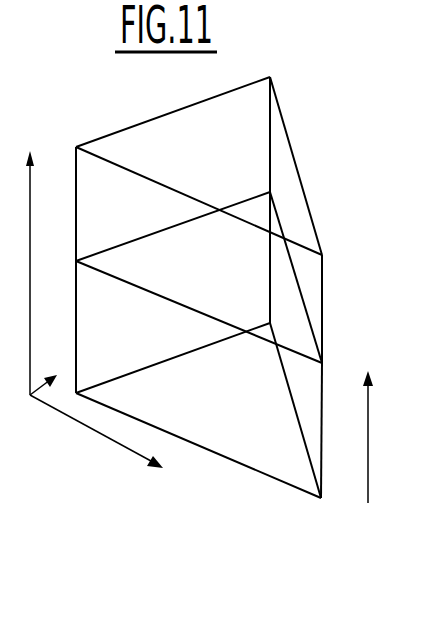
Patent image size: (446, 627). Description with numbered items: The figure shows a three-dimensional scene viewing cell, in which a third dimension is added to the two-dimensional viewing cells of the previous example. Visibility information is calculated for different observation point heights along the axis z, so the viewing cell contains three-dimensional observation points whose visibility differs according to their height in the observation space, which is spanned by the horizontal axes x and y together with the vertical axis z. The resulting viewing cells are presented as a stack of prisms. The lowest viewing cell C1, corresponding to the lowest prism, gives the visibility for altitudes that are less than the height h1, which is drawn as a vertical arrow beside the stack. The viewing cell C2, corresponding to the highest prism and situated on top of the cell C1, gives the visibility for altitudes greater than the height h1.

The lowest viewing cell C1 is at (245, 440).
The viewing cell C2 is at (90, 185).
The height h1 is at (382, 437).
The axis x is at (102, 448).
The axis y is at (48, 371).
The axis z is at (25, 261).